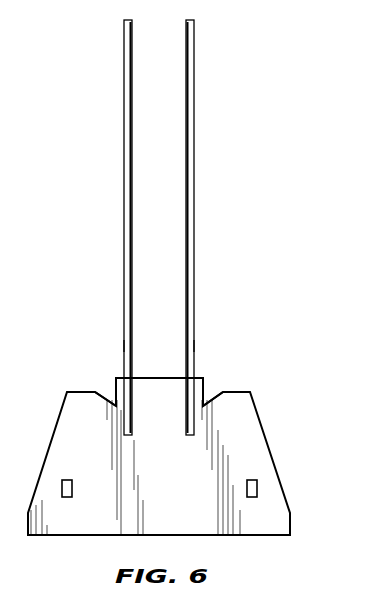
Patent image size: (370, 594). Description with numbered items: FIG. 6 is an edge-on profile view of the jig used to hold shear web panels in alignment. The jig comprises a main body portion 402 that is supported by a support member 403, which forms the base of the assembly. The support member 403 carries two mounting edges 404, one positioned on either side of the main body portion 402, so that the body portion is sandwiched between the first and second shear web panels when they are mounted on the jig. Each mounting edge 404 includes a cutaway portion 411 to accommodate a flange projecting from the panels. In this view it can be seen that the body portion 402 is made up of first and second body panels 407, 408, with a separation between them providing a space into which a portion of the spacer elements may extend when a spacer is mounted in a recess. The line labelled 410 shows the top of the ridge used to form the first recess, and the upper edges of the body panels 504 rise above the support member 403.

The main body portion 402 is at (86, 62).
The support member 403 is at (292, 519).
The mounting edges 404 is at (80, 392).
The first body panel 407 is at (195, 190).
The second body panel 408 is at (123, 189).
The top of the ridge 410 is at (128, 345).
The cutaway portion 411 is at (108, 397).
The electrode plate 504 is at (123, 88).